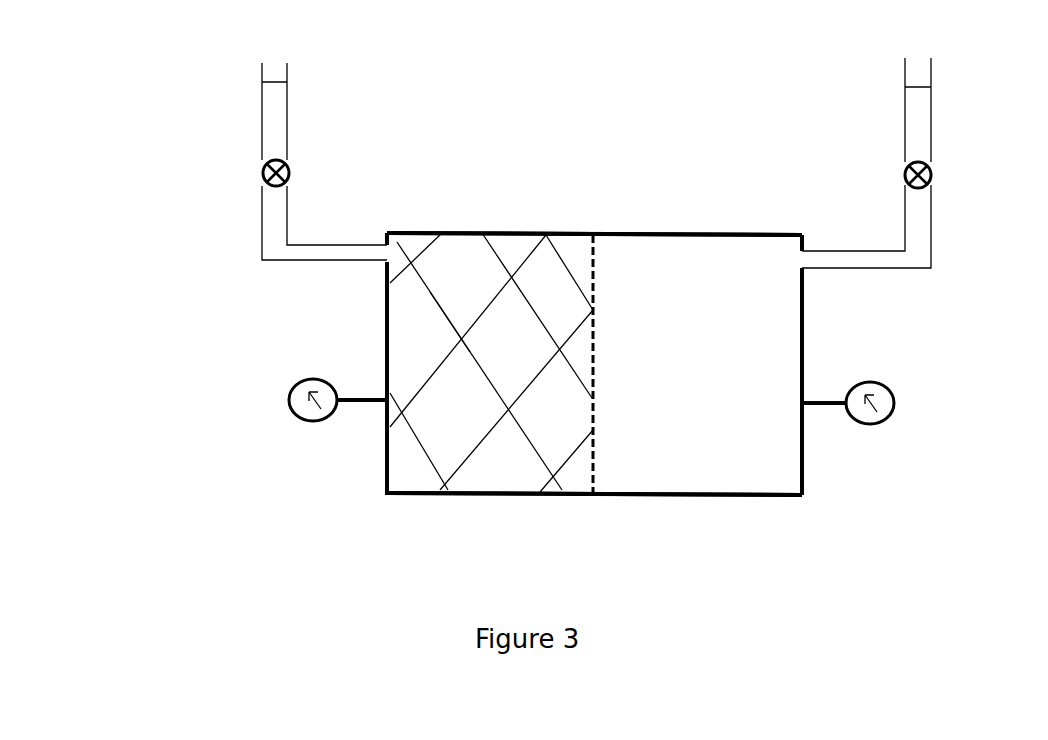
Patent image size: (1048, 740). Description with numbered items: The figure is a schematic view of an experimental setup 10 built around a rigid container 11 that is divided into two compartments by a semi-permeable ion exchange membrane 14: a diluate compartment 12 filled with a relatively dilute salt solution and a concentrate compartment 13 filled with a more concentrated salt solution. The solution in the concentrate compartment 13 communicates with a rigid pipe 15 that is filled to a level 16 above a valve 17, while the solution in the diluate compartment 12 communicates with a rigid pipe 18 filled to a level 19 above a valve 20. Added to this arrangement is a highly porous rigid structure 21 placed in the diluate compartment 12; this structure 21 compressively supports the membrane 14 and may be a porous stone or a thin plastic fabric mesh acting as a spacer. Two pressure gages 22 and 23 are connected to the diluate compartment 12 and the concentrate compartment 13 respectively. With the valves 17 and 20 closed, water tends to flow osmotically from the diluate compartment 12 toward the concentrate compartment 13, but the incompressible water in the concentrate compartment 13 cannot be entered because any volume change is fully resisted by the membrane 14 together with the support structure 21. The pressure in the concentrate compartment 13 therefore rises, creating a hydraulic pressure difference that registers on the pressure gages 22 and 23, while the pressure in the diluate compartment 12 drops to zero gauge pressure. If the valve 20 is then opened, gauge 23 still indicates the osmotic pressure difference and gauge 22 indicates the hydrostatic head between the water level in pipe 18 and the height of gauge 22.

The experimental setup 10 is at (594, 403).
The rigid container 11 is at (367, 437).
The diluate compartment 12 is at (488, 290).
The concentrate compartment 13 is at (717, 273).
The semi-permeable membrane 14 is at (603, 414).
The rigid pipe 15 is at (860, 279).
The level 16 is at (934, 93).
The valve 17 is at (944, 173).
The rigid pipe 18 is at (298, 273).
The level 19 is at (265, 92).
The valve 20 is at (249, 177).
The highly porous rigid structure 21 is at (442, 350).
The pressure gage 22 is at (281, 413).
The pressure gage 23 is at (908, 406).